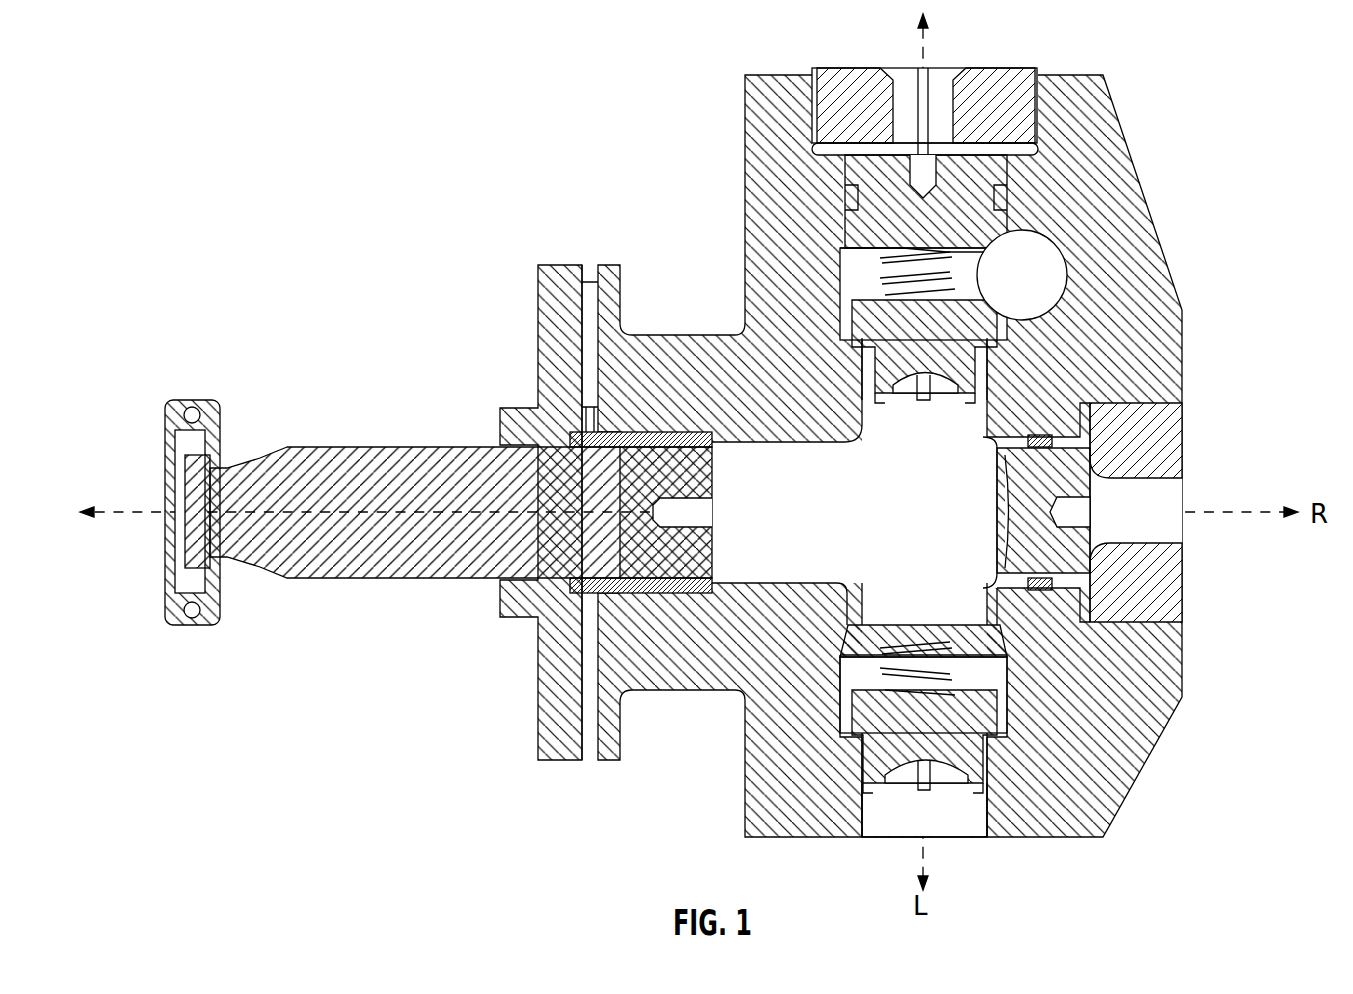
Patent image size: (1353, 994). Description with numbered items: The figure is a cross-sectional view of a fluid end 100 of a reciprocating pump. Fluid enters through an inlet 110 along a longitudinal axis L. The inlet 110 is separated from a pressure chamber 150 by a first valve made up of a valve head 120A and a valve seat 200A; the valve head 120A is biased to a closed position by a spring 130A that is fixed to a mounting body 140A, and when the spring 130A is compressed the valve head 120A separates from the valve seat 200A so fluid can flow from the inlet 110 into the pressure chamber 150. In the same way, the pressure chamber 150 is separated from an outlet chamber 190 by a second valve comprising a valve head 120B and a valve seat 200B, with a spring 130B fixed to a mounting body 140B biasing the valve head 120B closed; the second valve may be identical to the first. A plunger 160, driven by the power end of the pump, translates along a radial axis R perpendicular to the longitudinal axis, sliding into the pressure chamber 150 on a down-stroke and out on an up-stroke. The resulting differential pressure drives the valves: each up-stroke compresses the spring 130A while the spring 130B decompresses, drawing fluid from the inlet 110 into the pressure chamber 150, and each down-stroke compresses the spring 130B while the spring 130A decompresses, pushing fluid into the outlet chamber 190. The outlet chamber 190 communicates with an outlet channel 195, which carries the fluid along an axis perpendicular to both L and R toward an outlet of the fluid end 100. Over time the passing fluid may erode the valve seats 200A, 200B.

The fluid end 100 is at (758, 98).
The inlet 110 is at (963, 817).
The valve head 120A is at (960, 720).
The valve head 120B is at (862, 318).
The spring 130A is at (975, 660).
The spring 130B is at (935, 265).
The mounting body 140A is at (960, 632).
The mounting body 140B is at (940, 262).
The pressure chamber 150 is at (877, 548).
The plunger 160 is at (410, 465).
The outlet chamber 190 is at (853, 258).
The outlet channel 195 is at (1018, 267).
The valve seat 200A is at (867, 757).
The valve seat 200B is at (890, 318).